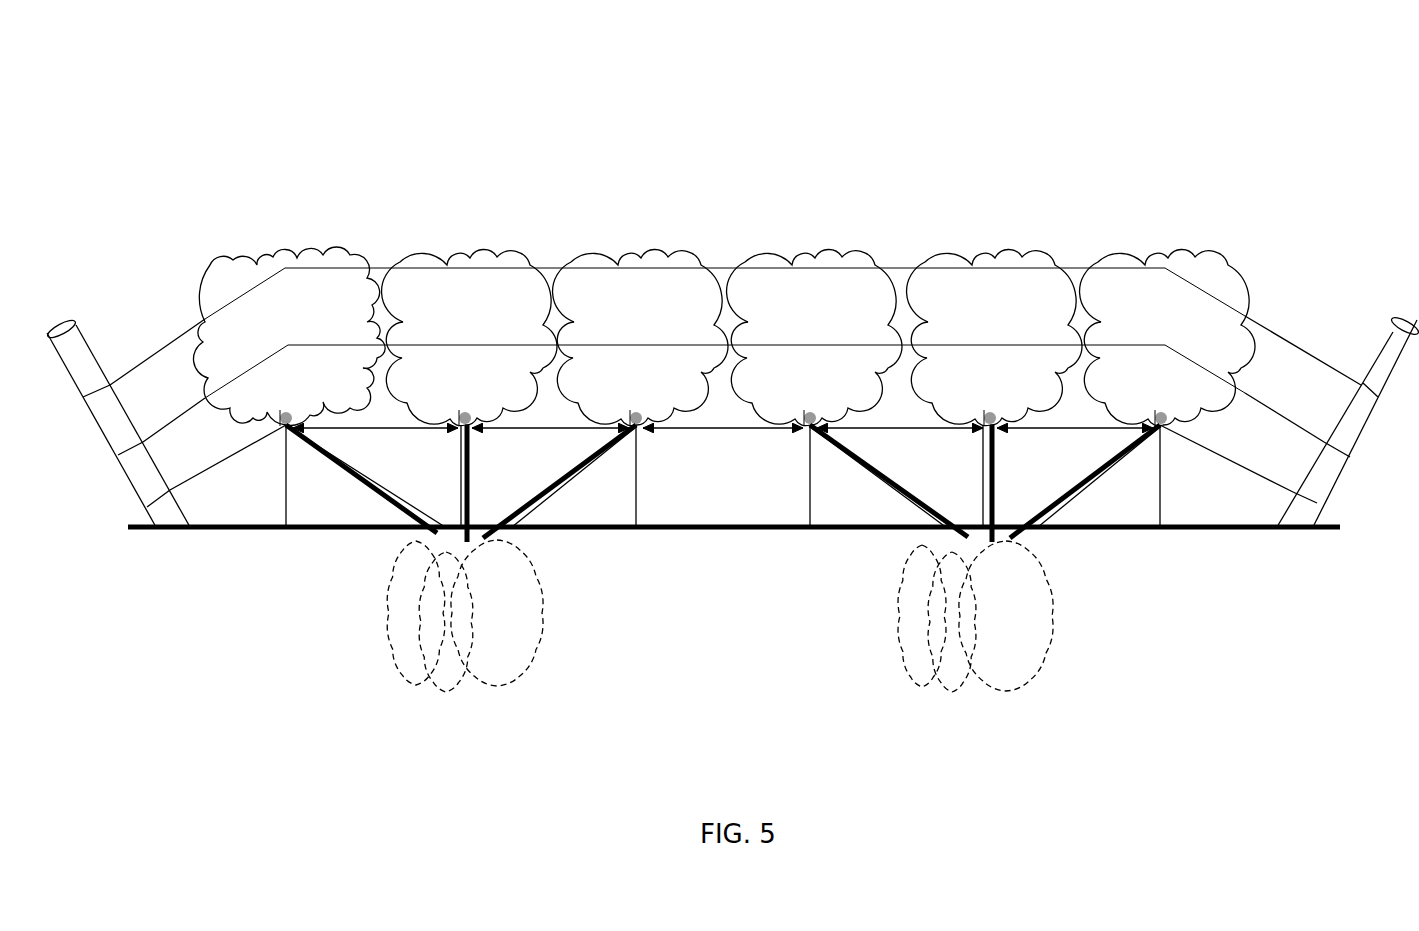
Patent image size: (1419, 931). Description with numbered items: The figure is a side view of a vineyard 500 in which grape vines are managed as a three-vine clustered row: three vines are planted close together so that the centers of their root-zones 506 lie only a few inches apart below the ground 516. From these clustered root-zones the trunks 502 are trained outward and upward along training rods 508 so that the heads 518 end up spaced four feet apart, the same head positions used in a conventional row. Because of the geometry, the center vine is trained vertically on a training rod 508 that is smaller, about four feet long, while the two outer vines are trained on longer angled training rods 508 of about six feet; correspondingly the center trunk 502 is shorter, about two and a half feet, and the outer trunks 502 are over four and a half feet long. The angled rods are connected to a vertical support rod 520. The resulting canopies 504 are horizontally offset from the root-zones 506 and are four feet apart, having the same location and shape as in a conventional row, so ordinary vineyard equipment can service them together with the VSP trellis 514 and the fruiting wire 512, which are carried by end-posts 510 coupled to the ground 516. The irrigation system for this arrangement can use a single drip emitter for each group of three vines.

The vineyard 500 is at (760, 123).
The trunks 502 is at (343, 452).
The canopies 504 is at (1130, 258).
The root-zones 506 is at (440, 697).
The training rods 508 is at (387, 512).
The end-posts 510 is at (1380, 327).
The fruiting wire 512 is at (240, 448).
The VSP trellis 514 is at (194, 402).
The ground 516 is at (1218, 540).
The heads 518 is at (303, 410).
The vertical support rod 520 is at (284, 492).